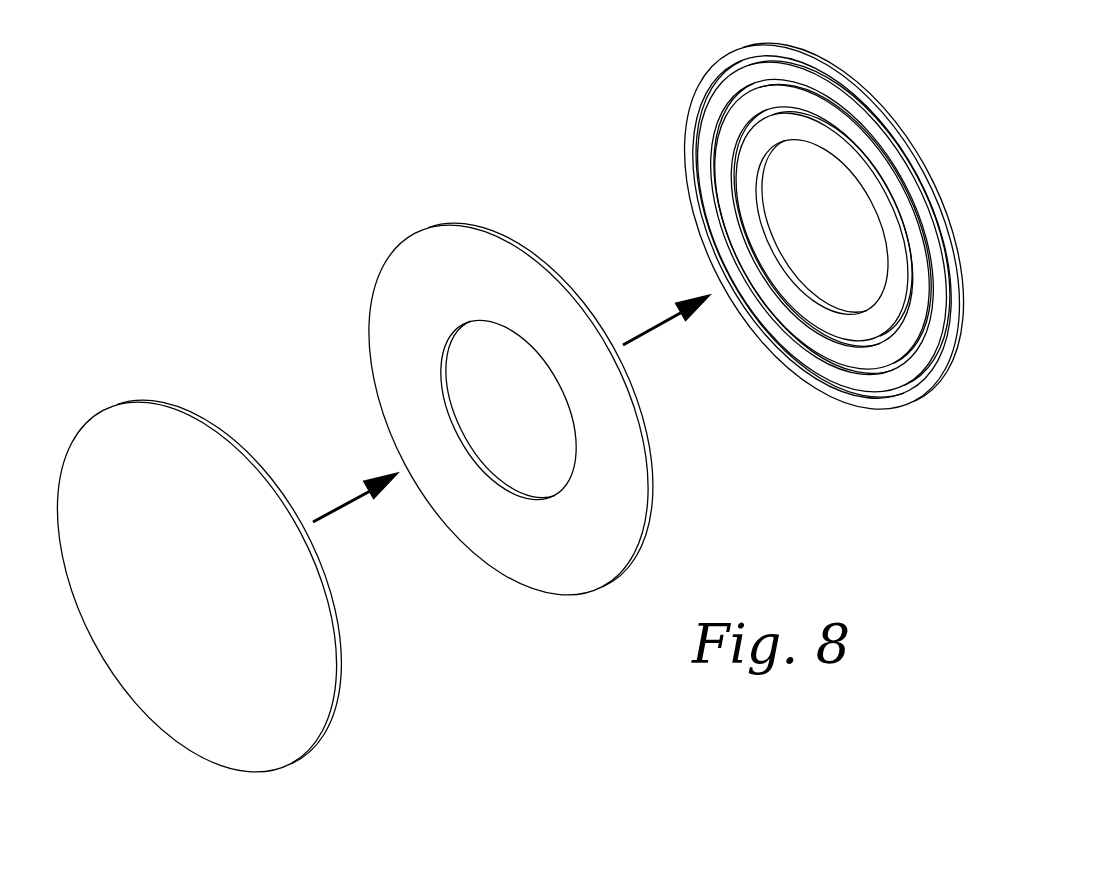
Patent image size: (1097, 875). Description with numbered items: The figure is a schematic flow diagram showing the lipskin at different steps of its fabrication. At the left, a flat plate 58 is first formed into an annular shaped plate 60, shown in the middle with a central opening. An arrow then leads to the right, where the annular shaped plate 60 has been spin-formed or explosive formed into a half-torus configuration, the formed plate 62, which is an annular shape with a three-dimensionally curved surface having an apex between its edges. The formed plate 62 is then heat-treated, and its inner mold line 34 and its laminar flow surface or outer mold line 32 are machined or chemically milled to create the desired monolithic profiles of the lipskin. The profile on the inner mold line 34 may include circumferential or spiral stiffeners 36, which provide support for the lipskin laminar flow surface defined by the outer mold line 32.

The outer mold line 32 is at (804, 242).
The inner mold line 34 is at (900, 402).
The stiffeners 36 is at (872, 398).
The plate 58 is at (171, 411).
The annular shaped plate 60 is at (540, 577).
The formed plate 62 is at (686, 111).